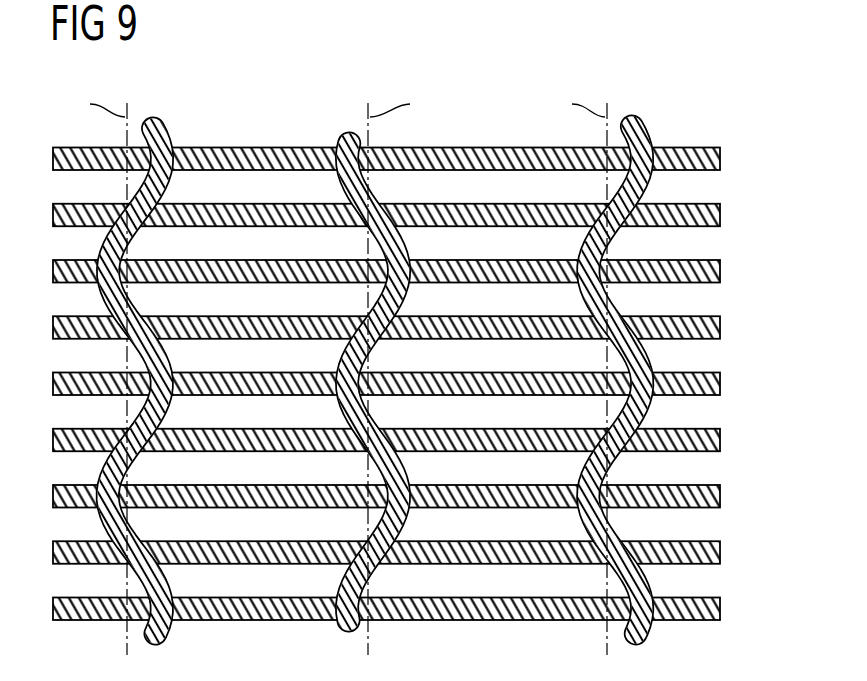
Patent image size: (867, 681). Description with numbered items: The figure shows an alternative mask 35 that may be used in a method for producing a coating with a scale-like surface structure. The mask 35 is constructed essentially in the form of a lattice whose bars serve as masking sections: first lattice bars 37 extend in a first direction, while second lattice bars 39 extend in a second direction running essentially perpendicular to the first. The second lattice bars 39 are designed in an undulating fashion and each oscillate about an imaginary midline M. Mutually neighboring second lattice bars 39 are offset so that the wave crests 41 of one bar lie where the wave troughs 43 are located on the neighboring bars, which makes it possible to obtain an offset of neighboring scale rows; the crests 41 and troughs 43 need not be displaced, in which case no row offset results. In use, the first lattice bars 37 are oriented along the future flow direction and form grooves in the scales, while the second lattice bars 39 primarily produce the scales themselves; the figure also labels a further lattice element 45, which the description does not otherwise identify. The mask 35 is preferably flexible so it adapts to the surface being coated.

The mask 35 is at (303, 110).
The first lattice bars 37 is at (538, 268).
The second lattice bars 39 is at (158, 408).
The wave crests 41 is at (663, 178).
The wave troughs 43 is at (620, 285).
The outer warp wire 45 is at (223, 178).